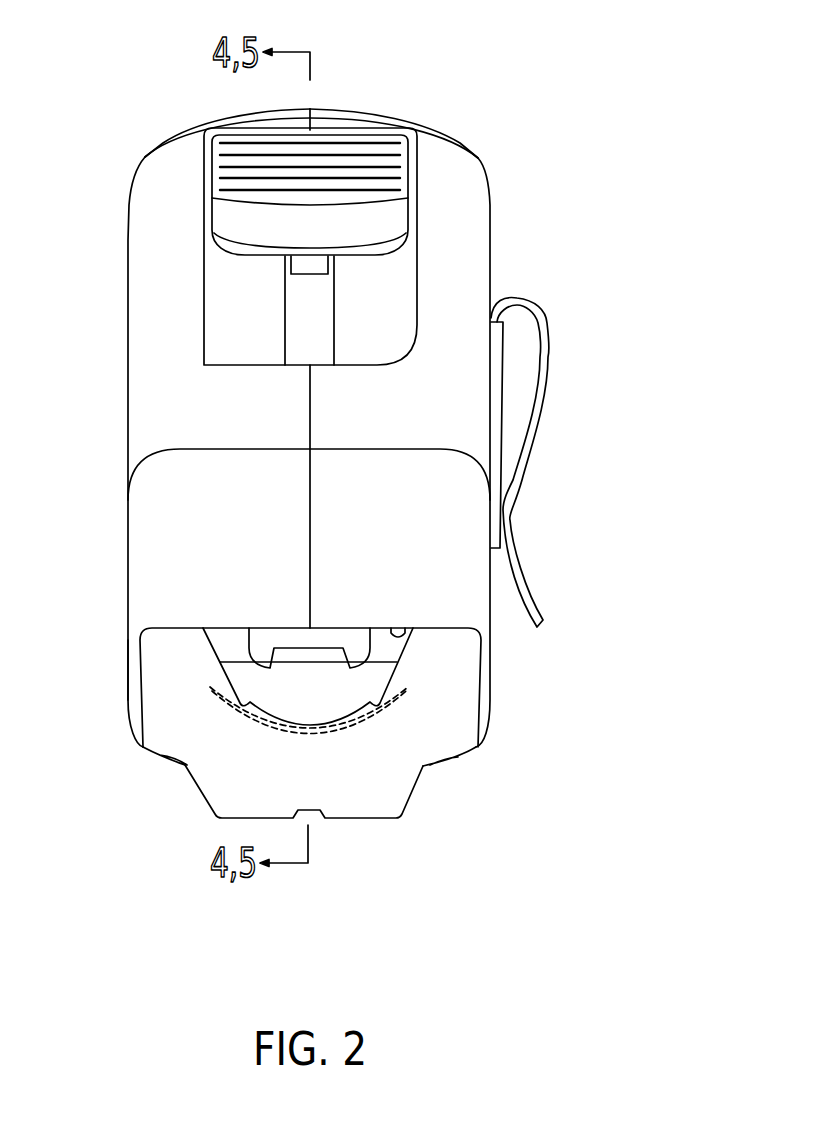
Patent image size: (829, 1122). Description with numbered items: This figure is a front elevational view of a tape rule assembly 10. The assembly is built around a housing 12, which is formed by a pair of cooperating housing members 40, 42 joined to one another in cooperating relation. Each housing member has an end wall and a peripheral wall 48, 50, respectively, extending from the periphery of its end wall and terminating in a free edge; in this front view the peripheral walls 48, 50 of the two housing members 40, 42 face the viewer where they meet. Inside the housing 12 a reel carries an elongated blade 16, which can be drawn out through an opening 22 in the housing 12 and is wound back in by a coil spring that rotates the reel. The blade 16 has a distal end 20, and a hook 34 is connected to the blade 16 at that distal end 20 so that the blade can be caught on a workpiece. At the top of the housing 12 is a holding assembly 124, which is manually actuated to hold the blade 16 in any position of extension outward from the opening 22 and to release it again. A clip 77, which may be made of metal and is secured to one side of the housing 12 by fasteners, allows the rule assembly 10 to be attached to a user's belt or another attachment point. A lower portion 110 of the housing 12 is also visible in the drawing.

The tape rule assembly 10 is at (330, 477).
The housing 12 is at (494, 196).
The holding assembly 124 is at (420, 188).
The housing member 42 is at (469, 300).
The peripheral wall 48 is at (230, 398).
The housing member 40 is at (148, 388).
The peripheral wall 50 is at (438, 381).
The clip 77 is at (527, 453).
The lower housing portion 110 is at (145, 523).
The distal end 20 is at (247, 680).
The opening 22 is at (402, 627).
The elongated blade 16 is at (343, 685).
The hook 34 is at (242, 788).